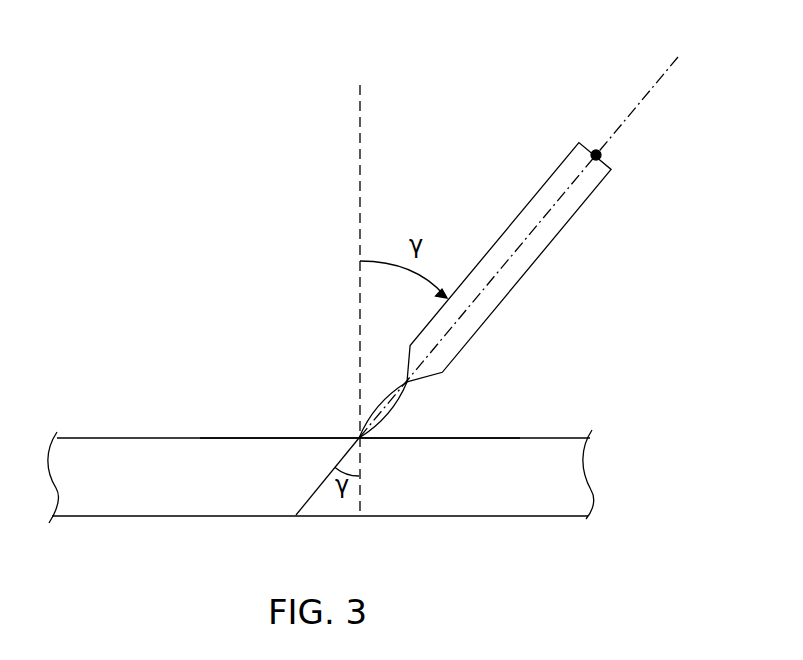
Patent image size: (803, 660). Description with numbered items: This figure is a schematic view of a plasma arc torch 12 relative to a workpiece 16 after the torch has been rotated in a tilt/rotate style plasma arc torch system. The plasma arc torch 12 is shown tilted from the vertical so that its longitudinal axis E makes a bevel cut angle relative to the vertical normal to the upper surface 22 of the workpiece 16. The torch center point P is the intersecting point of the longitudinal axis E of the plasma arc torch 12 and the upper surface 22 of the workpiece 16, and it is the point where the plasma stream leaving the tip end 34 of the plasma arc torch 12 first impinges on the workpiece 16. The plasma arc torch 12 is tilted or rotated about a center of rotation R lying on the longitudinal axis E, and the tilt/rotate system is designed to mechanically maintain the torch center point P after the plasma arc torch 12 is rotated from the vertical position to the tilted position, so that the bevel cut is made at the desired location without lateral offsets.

The plasma arc torch 12 is at (510, 222).
The workpiece 16 is at (90, 448).
The upper surface 22 is at (193, 437).
The tip end 34 is at (408, 383).
The longitudinal axis E is at (643, 97).
The center of rotation R is at (600, 152).
The torch center point P is at (357, 437).